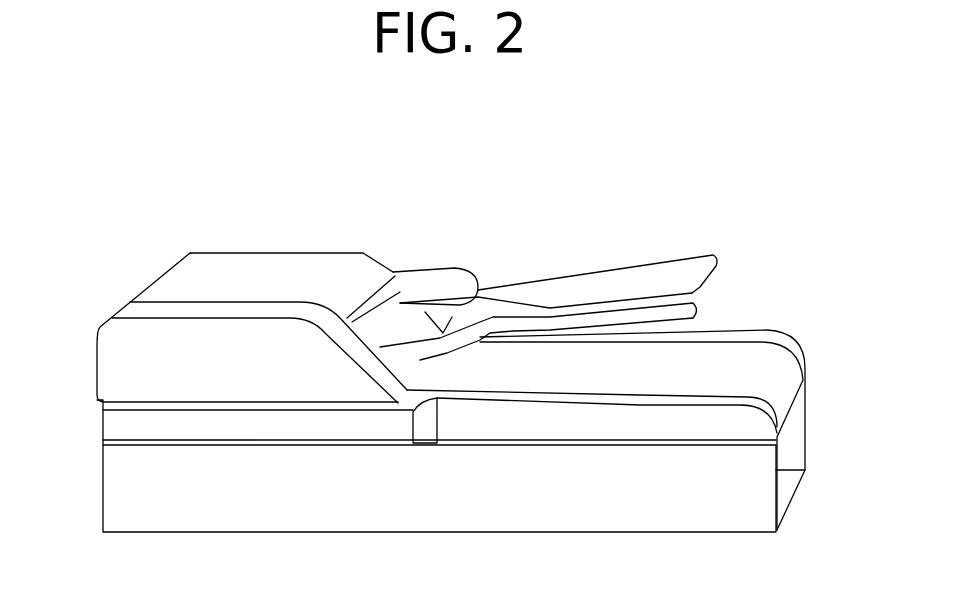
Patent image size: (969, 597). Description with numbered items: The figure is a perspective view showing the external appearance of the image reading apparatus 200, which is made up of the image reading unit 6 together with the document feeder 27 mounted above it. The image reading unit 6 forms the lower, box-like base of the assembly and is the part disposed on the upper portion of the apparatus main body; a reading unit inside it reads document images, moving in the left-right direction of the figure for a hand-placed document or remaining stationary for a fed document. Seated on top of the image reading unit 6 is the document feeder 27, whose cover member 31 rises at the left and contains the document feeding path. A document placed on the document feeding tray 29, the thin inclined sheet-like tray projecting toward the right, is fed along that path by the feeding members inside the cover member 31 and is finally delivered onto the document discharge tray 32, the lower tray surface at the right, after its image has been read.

The image reading apparatus 200 is at (799, 169).
The image reading unit 6 is at (120, 497).
The document feeder 27 is at (125, 373).
The cover member 31 is at (260, 272).
The document feeding tray 29 is at (615, 282).
The document discharge tray 32 is at (693, 363).